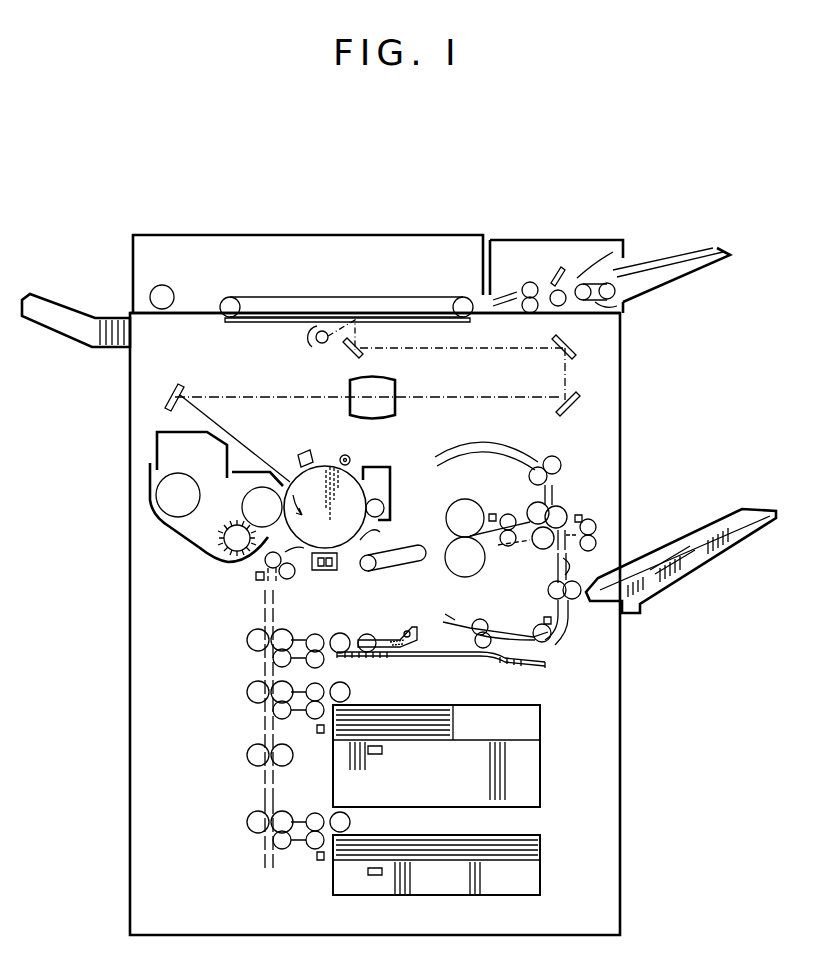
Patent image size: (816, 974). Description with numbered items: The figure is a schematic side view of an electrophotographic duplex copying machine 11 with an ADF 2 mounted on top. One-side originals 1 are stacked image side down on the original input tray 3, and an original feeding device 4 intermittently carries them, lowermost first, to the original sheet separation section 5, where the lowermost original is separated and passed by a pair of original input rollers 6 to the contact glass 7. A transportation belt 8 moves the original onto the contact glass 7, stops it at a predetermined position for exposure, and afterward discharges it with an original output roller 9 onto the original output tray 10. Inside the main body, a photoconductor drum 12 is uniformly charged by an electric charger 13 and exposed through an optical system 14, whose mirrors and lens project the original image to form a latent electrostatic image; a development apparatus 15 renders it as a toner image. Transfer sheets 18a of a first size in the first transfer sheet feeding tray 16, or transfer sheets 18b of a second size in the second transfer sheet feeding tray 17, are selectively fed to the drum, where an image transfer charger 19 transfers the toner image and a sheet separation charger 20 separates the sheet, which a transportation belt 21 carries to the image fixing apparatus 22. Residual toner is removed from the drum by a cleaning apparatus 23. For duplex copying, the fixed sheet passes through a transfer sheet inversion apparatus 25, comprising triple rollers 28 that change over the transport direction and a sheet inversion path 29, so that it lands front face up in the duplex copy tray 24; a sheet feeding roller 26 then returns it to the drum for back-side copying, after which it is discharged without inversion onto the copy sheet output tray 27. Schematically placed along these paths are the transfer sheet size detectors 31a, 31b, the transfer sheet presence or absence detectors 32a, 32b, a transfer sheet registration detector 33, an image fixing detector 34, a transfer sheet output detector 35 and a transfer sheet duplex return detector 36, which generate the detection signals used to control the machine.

The one-side original 1 is at (650, 263).
The ADF 2 is at (301, 272).
The original input tray 3 is at (680, 275).
The original feeding device 4 is at (626, 306).
The original sheet separation section 5 is at (548, 272).
The original input rollers 6 is at (524, 282).
The contact glass 7 is at (364, 315).
The transportation belt 8 is at (407, 297).
The original output roller 9 is at (172, 286).
The original output tray 10 is at (65, 308).
The electrophotographic duplex copying machine 11 is at (621, 808).
The photoconductor drum 12 is at (355, 523).
The electric charger 13 is at (300, 452).
The optical system 14 is at (572, 372).
The development apparatus 15 is at (208, 540).
The first transfer sheet feeding tray 16 is at (435, 745).
The second transfer sheet feeding tray 17 is at (447, 862).
The transfer sheets of a first size 18a is at (420, 720).
The transfer sheets of a second size 18b is at (408, 845).
The image transfer charger 19 is at (293, 571).
The sheet separation charger 20 is at (328, 572).
The transportation belt 21 is at (378, 570).
The image fixing apparatus 22 is at (448, 565).
The cleaning apparatus 23 is at (378, 470).
The duplex copy tray 24 is at (492, 668).
The transfer sheet inversion apparatus 25 is at (596, 466).
The sheet feeding roller 26 is at (343, 632).
The copy sheet output tray 27 is at (700, 562).
The triple rollers 28 is at (567, 495).
The sheet inversion path 29 is at (520, 452).
The transfer sheet size detector 31a is at (318, 735).
The transfer sheet size detector 31b is at (316, 858).
The transfer sheet presence or absence detector 32a is at (375, 754).
The transfer sheet presence or absence detector 32b is at (375, 875).
The transfer sheet registration detector 33 is at (253, 576).
The image fixing detector 34 is at (492, 512).
The transfer sheet output detector 35 is at (583, 510).
The transfer sheet duplex return detector 36 is at (540, 612).